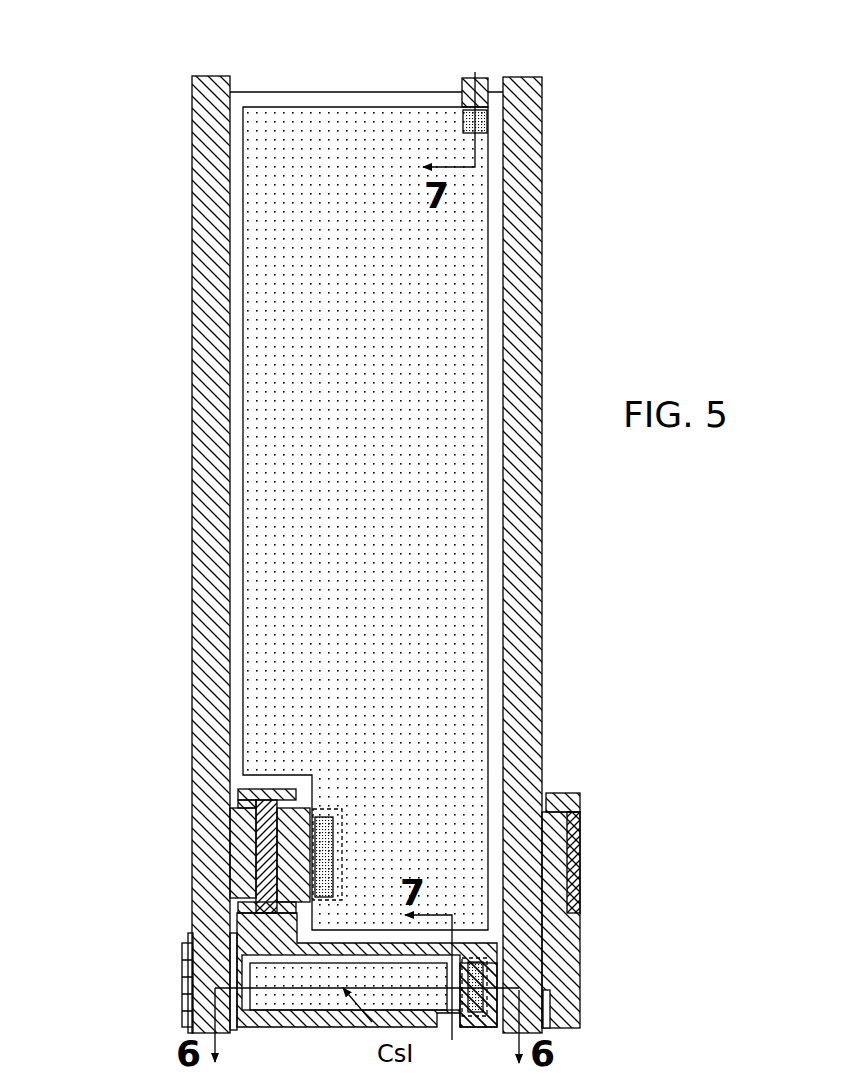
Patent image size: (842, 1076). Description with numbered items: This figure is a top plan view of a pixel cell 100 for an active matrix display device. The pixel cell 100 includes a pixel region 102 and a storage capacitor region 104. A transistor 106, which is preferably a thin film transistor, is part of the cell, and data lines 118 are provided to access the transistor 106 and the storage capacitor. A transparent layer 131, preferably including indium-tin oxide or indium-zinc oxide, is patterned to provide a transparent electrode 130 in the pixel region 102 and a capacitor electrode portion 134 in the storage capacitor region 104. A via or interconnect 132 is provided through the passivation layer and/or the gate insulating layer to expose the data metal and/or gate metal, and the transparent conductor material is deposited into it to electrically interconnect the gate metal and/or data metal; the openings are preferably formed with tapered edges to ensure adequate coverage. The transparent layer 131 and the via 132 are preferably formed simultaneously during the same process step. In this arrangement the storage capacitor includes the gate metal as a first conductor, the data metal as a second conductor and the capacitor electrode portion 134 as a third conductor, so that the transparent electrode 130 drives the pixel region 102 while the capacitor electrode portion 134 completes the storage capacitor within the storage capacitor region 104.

The pixel cell 100 is at (582, 140).
The pixel region 102 is at (165, 115).
The storage capacitor region 104 is at (147, 922).
The transistor 106 is at (273, 843).
The data lines 118 is at (520, 76).
The transparent electrode 130 is at (382, 507).
The transparent layer 131 is at (477, 953).
The via 132 is at (480, 973).
The capacitor electrode portion 134 is at (283, 998).